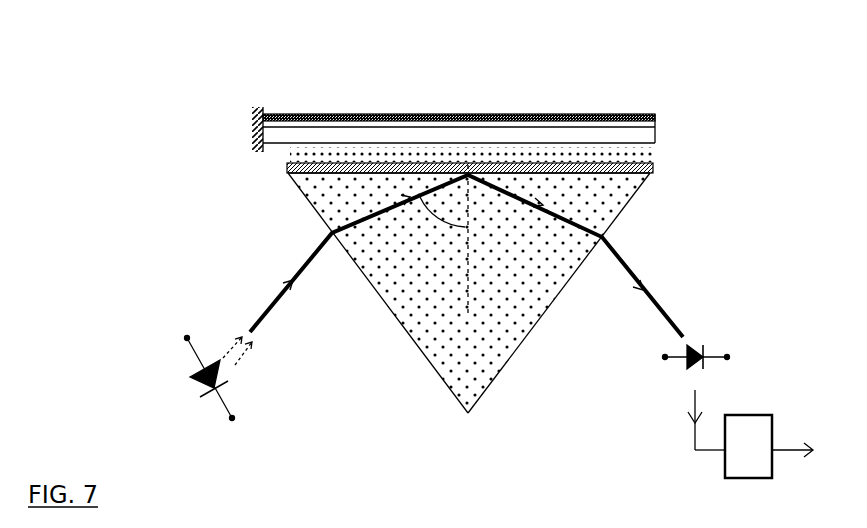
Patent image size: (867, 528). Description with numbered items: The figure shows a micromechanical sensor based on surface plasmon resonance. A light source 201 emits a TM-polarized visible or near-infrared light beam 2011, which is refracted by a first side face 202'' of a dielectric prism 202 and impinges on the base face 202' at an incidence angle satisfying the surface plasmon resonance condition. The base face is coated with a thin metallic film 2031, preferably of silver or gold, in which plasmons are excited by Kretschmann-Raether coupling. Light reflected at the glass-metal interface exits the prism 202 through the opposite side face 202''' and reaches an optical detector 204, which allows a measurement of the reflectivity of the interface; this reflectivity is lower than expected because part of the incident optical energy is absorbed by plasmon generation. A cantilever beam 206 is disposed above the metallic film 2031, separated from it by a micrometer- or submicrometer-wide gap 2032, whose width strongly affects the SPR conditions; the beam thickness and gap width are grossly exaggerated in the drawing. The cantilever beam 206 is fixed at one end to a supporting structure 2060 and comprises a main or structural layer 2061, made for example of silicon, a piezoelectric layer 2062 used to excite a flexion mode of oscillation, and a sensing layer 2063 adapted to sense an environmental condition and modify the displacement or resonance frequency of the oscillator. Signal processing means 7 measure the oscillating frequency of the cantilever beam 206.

The signal processing means 7 is at (725, 465).
The light source 201 is at (200, 370).
The light beam 2011 is at (283, 290).
The prism 202 is at (521, 310).
The base face 202' is at (521, 195).
The first side face 202'' is at (378, 293).
The opposite side face 202''' is at (559, 293).
The thin metallic film 2031 is at (653, 167).
The gap 2032 is at (643, 155).
The optical detector 204 is at (708, 343).
The cantilever beam 206 is at (444, 84).
The supporting structure 2060 is at (258, 133).
The main layer 2061 is at (380, 137).
The piezoelectric layer 2062 is at (387, 127).
The sensing layer 2063 is at (445, 118).